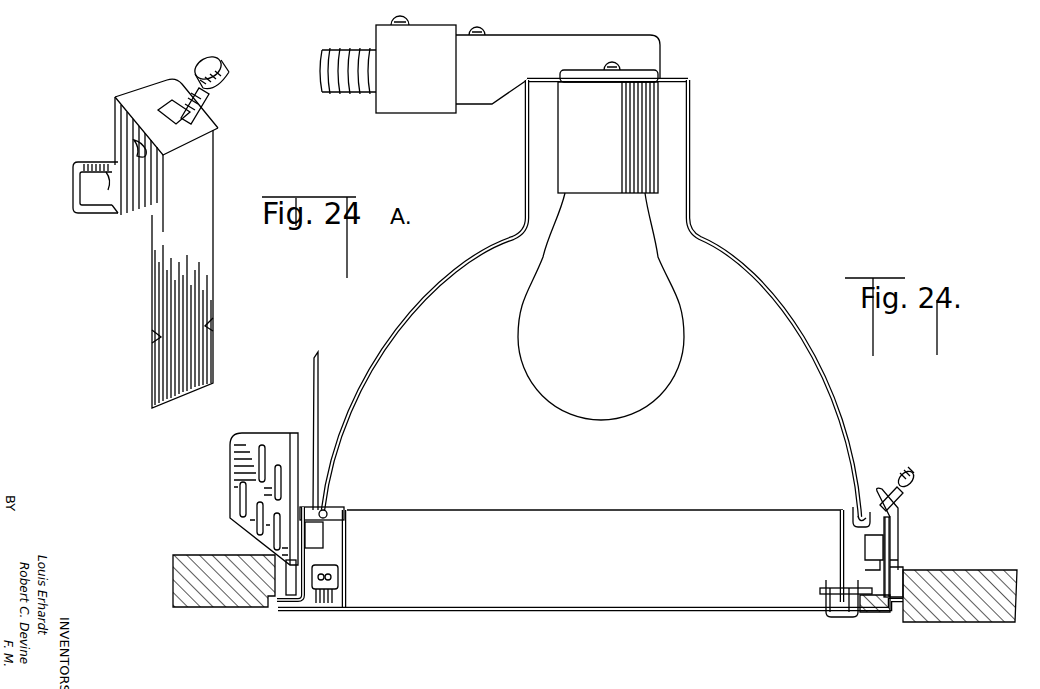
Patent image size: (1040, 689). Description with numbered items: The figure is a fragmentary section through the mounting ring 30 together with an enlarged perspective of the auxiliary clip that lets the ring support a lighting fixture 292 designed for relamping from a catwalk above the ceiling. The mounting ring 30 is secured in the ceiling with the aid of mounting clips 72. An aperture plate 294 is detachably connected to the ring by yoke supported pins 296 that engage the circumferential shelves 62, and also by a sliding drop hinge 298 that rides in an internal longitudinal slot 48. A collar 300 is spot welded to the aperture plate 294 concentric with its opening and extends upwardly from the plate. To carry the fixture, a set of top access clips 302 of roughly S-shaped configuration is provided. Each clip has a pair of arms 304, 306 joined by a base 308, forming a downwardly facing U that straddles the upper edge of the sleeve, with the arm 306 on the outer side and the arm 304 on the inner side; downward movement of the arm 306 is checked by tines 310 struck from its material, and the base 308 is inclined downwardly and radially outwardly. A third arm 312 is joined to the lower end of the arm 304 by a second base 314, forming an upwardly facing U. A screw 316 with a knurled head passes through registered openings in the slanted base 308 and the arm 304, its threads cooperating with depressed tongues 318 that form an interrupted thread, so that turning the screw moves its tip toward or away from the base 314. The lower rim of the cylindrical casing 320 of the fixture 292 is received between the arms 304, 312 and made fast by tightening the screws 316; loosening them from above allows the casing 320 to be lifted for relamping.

In FIG. 24, the lighting fixture 292 is at (790, 277).
In FIG. 24, the aperture plate 294 is at (370, 613).
In FIG. 24, the yoke supported pins 296 is at (853, 617).
In FIG. 24, the sliding drop hinge 298 is at (318, 392).
In FIG. 24, the collar 300 is at (349, 512).
In FIG. 24A, the top access clip 302 is at (171, 68).
In FIG. 24, the top access clip 302 is at (894, 481).
In FIG. 24A, the arm 304 is at (122, 215).
In FIG. 24A, the arm 306 is at (213, 173).
In FIG. 24, the arm 306 is at (890, 530).
In FIG. 24A, the base 308 is at (197, 125).
In FIG. 24A, the tines 310 is at (152, 343).
In FIG. 24, the tines 310 is at (897, 567).
In FIG. 24A, the third arm 312 is at (73, 188).
In FIG. 24A, the second base 314 is at (96, 208).
In FIG. 24A, the screw 316 is at (192, 102).
In FIG. 24, the screw 316 is at (903, 496).
In FIG. 24, the depressed tongues 318 is at (898, 520).
In FIG. 24, the cylindrical casing 320 is at (853, 516).
In FIG. 24, the mounting clips 72 is at (230, 484).
In FIG. 24, the internal longitudinal slot 48 is at (323, 537).
In FIG. 24, the mounting ring 30 is at (297, 612).
In FIG. 24, the circumferential shelves 62 is at (885, 612).